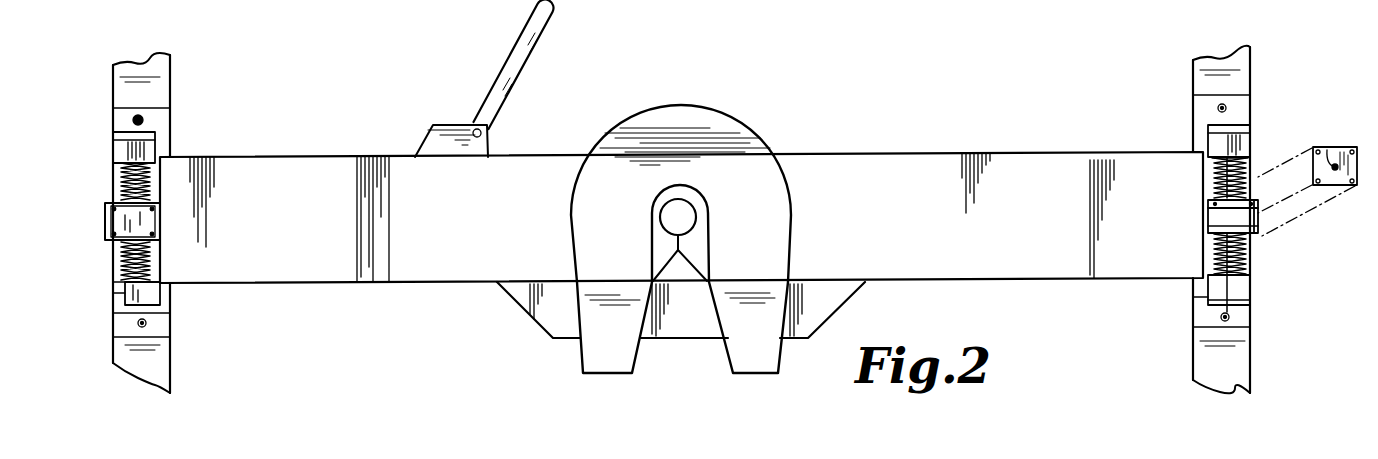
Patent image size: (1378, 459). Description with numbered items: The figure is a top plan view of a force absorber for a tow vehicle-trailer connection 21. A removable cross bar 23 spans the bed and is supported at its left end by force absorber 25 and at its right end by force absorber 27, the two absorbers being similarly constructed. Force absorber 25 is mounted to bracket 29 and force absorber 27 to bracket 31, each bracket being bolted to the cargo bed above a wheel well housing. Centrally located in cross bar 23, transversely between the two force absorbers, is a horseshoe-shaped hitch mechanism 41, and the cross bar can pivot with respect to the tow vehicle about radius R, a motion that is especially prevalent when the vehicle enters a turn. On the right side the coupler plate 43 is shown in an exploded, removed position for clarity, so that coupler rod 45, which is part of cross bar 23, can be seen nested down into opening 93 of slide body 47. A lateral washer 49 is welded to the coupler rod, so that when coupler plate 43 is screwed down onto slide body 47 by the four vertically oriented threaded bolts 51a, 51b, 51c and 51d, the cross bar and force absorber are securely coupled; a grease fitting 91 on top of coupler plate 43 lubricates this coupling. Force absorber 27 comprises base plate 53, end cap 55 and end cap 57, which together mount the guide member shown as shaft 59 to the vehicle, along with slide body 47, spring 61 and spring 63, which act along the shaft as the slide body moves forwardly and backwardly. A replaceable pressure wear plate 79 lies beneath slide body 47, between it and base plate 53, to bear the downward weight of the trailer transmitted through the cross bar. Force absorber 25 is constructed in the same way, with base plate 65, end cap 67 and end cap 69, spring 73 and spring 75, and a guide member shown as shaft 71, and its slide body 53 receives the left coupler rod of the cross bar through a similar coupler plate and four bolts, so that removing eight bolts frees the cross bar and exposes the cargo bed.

The tow vehicle-trailer connection 21 is at (868, 96).
The cross bar 23 is at (474, 237).
The force absorber 25 is at (173, 151).
The force absorber 27 is at (1151, 121).
The bracket 29 is at (164, 373).
The bracket 31 is at (1241, 371).
The hitch mechanism 41 is at (740, 148).
The radius R is at (1207, 135).
The coupler plate 43 is at (1337, 186).
The coupler rod 45 is at (1210, 222).
The slide body 47 is at (1210, 196).
The lateral washer 49 is at (1258, 226).
The threaded bolt 51a is at (1318, 151).
The threaded bolt 51b is at (1352, 151).
The threaded bolt 51c is at (1318, 184).
The threaded bolt 51d is at (1352, 184).
The base plate 53 is at (108, 200).
The end cap 55 is at (1243, 128).
The end cap 57 is at (1250, 306).
The shaft 59 is at (1233, 158).
The spring 61 is at (1243, 258).
The spring 63 is at (1207, 170).
The base plate 65 is at (112, 275).
The end cap 67 is at (155, 134).
The end cap 69 is at (115, 303).
The shaft 71 is at (118, 160).
The spring 73 is at (155, 260).
The spring 75 is at (120, 180).
The pressure wear plate 79 is at (1215, 250).
The grease fitting 91 is at (1327, 150).
The opening 93 is at (660, 458).